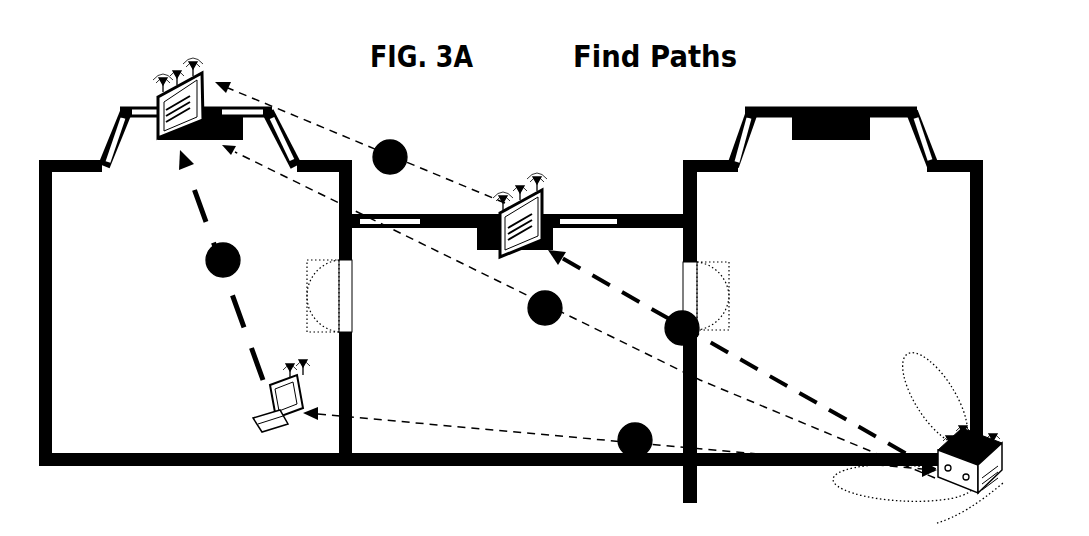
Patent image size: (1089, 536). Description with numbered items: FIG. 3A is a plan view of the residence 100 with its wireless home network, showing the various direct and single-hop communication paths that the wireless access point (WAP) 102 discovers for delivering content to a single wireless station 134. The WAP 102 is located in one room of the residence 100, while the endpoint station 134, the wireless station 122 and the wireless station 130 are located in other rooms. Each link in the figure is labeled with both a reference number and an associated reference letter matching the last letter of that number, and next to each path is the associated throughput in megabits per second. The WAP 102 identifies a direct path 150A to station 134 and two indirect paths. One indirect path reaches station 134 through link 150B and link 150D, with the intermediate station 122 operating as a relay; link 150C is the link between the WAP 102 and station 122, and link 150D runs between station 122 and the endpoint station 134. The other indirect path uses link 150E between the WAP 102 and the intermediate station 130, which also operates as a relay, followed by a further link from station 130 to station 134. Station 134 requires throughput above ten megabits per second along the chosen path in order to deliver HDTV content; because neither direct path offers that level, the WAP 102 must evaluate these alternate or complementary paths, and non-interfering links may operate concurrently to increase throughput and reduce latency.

The residence 100 is at (985, 120).
The wireless access point 102 is at (1000, 478).
The wireless station 122 is at (545, 200).
The wireless station 130 is at (291, 366).
The wireless station 134 is at (155, 107).
The direct path 150A is at (590, 327).
The link 150B is at (744, 358).
The link 150C is at (511, 432).
The link 150D is at (435, 182).
The link 150E is at (227, 292).